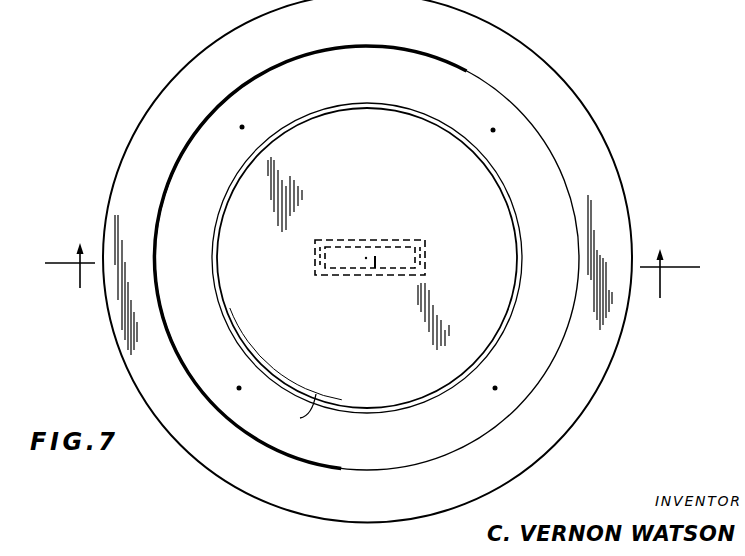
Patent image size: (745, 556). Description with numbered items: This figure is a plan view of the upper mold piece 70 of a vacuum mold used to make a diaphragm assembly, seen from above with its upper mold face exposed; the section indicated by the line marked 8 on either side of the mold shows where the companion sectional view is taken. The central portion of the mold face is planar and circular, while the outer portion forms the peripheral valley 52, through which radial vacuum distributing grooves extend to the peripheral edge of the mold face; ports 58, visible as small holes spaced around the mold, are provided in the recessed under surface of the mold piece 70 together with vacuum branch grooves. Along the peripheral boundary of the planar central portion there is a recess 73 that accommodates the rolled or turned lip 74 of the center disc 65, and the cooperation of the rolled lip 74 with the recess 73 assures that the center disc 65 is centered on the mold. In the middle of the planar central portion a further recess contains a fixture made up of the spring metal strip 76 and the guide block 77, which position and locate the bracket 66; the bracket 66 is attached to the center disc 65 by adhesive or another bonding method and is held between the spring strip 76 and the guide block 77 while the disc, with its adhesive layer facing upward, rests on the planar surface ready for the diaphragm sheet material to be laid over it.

The upper mold piece 70 is at (378, 23).
The peripheral valley 52 is at (217, 361).
The recess 73 is at (222, 305).
The rolled lip 74 is at (297, 409).
The center disc 65 is at (378, 187).
The bracket 66 is at (375, 275).
The guide block 77 is at (318, 260).
The spring metal strip 76 is at (425, 261).
The ports 58 is at (364, 74).
The section line 8- 8 is at (372, 270).